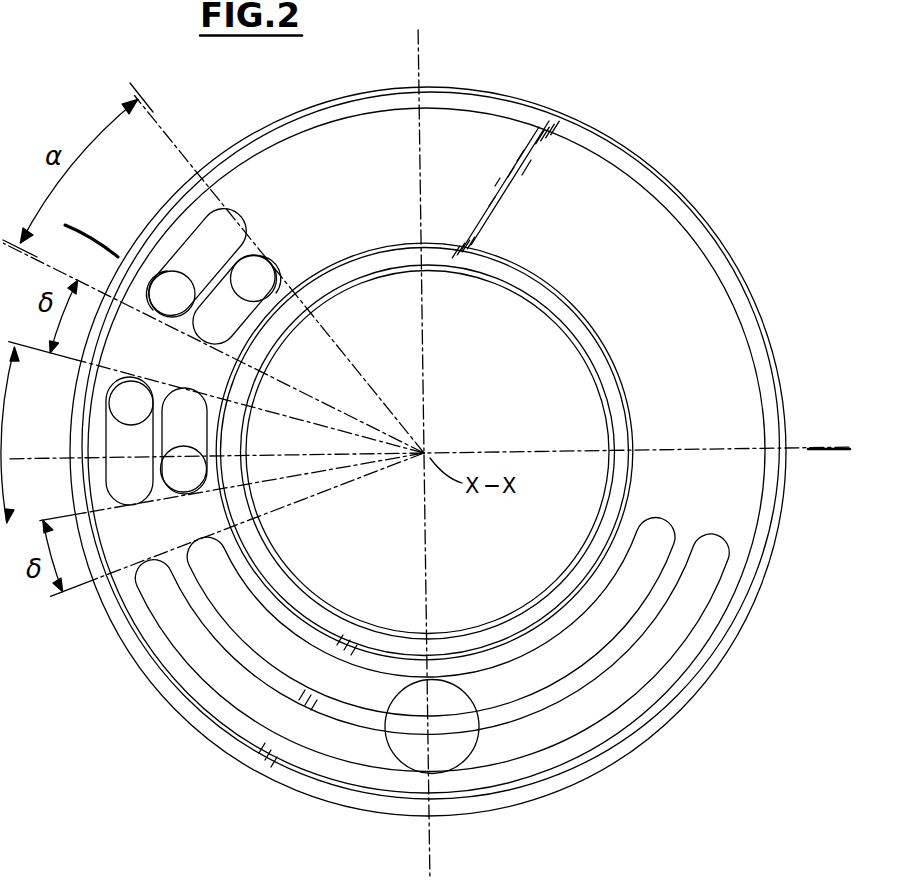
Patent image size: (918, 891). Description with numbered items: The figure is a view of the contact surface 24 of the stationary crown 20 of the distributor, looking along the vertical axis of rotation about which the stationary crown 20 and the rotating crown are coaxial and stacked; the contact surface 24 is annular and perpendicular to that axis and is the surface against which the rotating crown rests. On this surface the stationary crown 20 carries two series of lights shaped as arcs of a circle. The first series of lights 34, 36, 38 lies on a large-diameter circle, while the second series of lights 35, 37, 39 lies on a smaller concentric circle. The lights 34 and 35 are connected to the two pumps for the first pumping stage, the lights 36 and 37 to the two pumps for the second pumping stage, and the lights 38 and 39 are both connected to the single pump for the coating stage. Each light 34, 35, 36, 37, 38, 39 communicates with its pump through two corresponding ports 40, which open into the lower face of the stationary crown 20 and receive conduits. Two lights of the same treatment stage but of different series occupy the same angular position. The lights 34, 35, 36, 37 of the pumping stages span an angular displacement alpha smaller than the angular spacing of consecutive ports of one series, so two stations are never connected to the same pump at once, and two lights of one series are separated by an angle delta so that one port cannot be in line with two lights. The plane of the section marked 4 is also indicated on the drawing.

The stationary crown 20 is at (660, 124).
The contact surface 24 is at (650, 212).
The light 34 is at (244, 208).
The light 35 is at (283, 345).
The light 36 is at (118, 440).
The light 37 is at (192, 416).
The light 38 is at (178, 628).
The light 39 is at (232, 586).
The port 40 is at (240, 277).
The section line 4- 4 is at (102, 188).